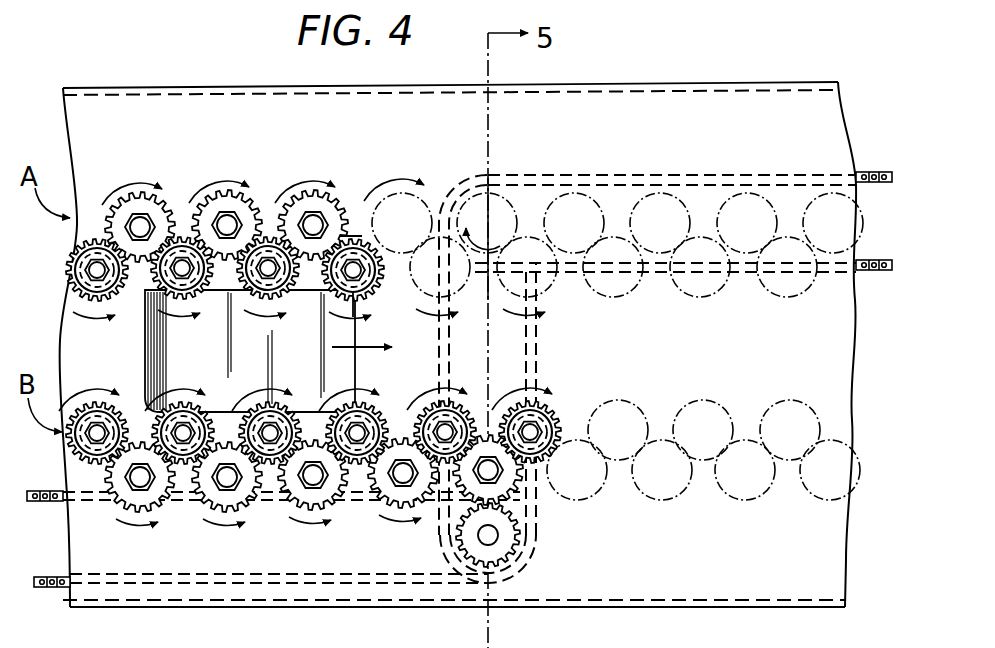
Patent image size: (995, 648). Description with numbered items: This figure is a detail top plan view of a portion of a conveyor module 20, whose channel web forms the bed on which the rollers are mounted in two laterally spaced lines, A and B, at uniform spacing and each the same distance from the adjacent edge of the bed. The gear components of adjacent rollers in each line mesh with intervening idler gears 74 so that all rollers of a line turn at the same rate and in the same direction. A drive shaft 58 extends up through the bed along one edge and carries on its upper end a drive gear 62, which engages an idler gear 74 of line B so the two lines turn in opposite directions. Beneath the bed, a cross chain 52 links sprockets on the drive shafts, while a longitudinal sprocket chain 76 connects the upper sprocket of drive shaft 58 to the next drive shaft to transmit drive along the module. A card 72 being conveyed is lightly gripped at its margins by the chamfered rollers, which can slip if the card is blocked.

The module 20 is at (720, 606).
The cross chain 52 is at (536, 347).
The drive shaft 58 is at (482, 538).
The drive gear 62 is at (518, 543).
The card 72 is at (150, 348).
The idler gear 74 is at (292, 215).
The longitudinal sprocket chain 76 is at (48, 590).